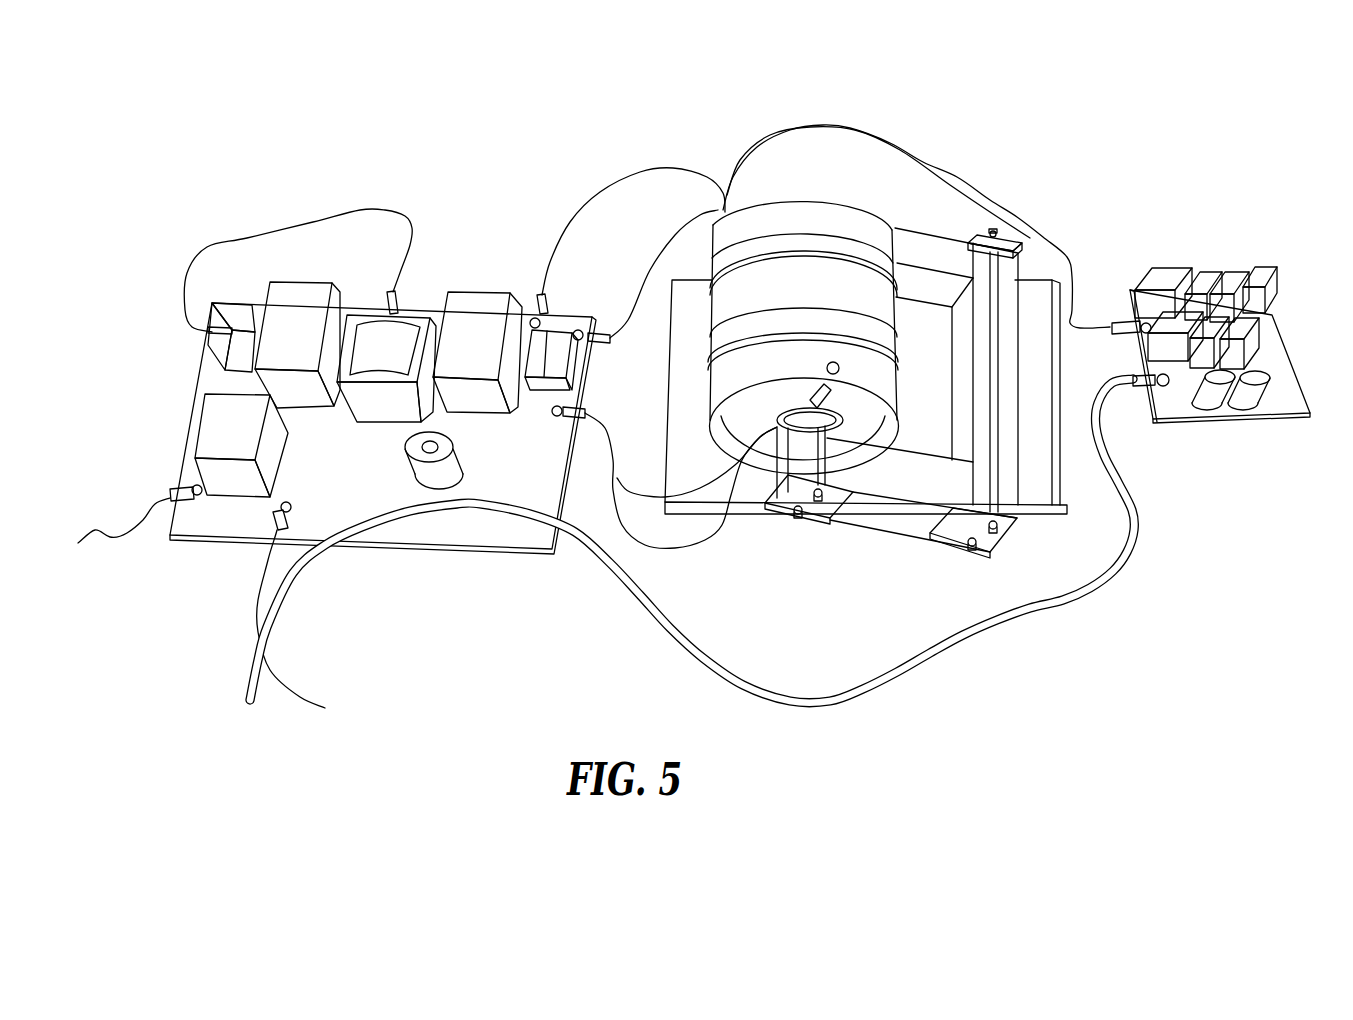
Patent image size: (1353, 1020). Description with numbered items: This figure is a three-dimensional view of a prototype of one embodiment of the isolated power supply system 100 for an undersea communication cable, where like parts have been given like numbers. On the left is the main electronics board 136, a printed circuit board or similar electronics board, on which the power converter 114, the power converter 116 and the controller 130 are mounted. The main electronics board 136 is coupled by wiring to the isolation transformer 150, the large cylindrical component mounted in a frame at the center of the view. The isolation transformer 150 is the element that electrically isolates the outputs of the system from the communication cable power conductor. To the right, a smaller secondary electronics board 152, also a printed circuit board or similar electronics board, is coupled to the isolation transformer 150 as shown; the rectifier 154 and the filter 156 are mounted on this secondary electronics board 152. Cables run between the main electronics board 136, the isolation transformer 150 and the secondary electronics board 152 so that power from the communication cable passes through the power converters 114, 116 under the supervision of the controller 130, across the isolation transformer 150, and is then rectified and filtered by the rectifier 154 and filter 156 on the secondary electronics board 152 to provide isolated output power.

The isolated power supply system 100 is at (709, 113).
The power converter 114 is at (282, 266).
The power converter 116 is at (476, 282).
The controller 130 is at (197, 469).
The main electronics board 136 is at (177, 409).
The isolation transformer 150 is at (812, 294).
The secondary electronics board 152 is at (1286, 254).
The rectifier 154 is at (1161, 260).
The filter 156 is at (1219, 260).